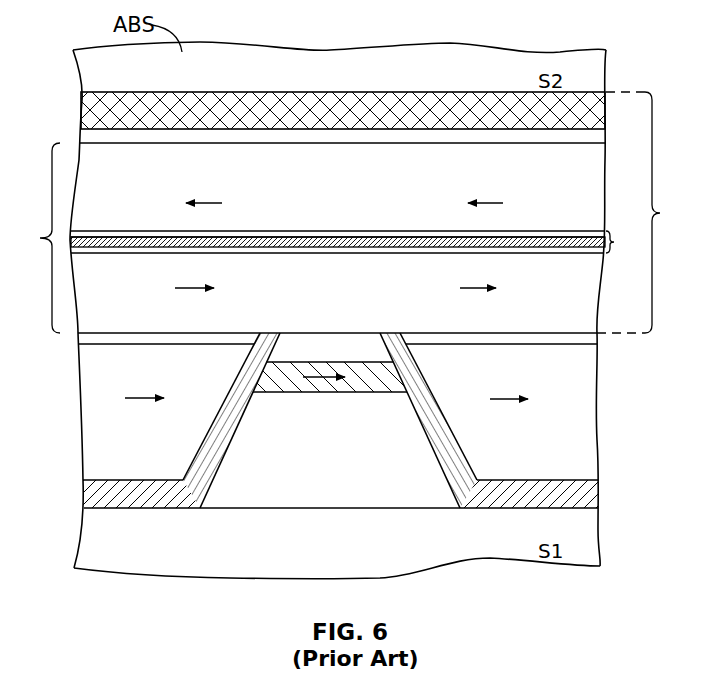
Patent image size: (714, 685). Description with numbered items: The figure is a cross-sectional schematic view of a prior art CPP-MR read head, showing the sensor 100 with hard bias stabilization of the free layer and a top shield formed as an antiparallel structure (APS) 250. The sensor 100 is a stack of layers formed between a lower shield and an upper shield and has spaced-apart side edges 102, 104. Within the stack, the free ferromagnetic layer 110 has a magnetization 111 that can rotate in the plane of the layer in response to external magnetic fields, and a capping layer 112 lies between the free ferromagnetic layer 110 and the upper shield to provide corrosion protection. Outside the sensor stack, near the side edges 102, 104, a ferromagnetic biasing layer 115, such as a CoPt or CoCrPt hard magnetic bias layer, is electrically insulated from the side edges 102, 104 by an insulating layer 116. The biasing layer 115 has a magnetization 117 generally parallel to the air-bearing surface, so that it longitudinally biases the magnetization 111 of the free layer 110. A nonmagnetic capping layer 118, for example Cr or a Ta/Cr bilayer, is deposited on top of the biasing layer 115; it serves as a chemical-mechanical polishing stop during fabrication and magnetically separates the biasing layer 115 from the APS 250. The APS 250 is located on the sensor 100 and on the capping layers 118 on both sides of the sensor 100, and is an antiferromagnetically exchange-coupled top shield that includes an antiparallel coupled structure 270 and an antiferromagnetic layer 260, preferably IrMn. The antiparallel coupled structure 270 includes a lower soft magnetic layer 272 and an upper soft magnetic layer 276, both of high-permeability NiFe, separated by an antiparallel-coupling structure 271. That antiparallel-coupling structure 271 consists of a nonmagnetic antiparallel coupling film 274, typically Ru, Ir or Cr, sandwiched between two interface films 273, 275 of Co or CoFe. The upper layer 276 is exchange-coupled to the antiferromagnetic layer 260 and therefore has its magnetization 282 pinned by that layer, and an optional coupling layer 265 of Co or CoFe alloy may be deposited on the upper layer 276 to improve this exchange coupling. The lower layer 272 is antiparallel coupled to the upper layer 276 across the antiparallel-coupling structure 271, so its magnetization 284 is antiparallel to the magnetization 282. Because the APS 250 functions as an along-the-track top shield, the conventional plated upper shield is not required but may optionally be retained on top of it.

The sensor 100 is at (280, 335).
The side edge 102 is at (206, 493).
The side edge 104 is at (453, 493).
The free ferromagnetic layer 110 is at (327, 364).
The magnetization direction of the free layer 111 is at (335, 382).
The capping layer 112 is at (355, 345).
The ferromagnetic biasing layer 115 is at (88, 408).
The insulating layer 116 is at (86, 496).
The magnetization of the biasing layer 117 is at (150, 398).
The capping layer 118 is at (172, 333).
The antiparallel structure top shield 250 is at (651, 212).
The antiferromagnetic layer 260 is at (92, 115).
The coupling layer 265 is at (92, 138).
The antiparallel coupled structure 270 is at (31, 238).
The antiparallel-coupling structure 271 is at (630, 243).
The lower soft magnetic layer 272 is at (585, 301).
The interface film 273 is at (268, 251).
The antiparallel coupling film 274 is at (374, 245).
The interface film 275 is at (348, 234).
The upper soft magnetic layer 276 is at (585, 189).
The magnetization of the upper layer 282 is at (200, 203).
The magnetization of the lower layer 284 is at (200, 288).